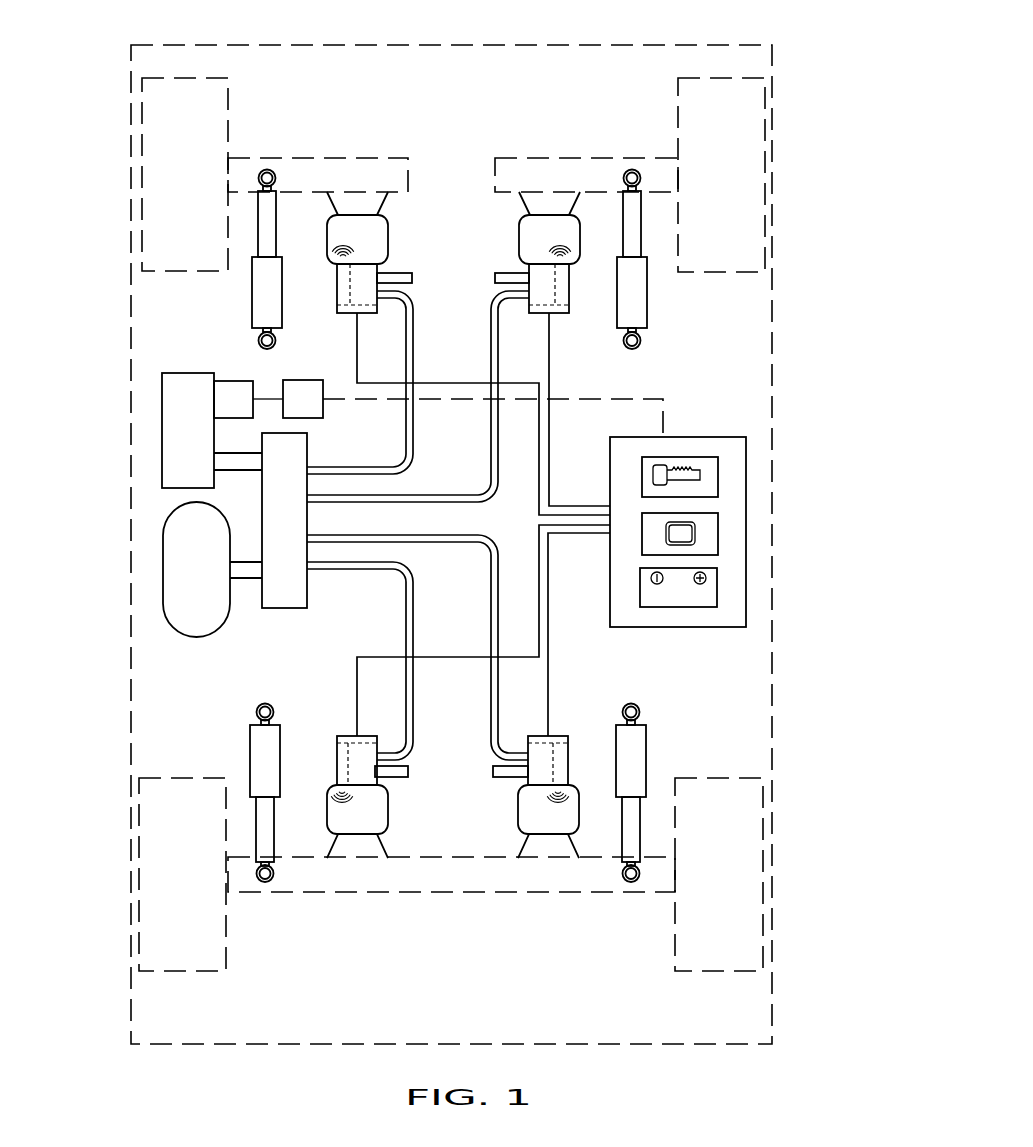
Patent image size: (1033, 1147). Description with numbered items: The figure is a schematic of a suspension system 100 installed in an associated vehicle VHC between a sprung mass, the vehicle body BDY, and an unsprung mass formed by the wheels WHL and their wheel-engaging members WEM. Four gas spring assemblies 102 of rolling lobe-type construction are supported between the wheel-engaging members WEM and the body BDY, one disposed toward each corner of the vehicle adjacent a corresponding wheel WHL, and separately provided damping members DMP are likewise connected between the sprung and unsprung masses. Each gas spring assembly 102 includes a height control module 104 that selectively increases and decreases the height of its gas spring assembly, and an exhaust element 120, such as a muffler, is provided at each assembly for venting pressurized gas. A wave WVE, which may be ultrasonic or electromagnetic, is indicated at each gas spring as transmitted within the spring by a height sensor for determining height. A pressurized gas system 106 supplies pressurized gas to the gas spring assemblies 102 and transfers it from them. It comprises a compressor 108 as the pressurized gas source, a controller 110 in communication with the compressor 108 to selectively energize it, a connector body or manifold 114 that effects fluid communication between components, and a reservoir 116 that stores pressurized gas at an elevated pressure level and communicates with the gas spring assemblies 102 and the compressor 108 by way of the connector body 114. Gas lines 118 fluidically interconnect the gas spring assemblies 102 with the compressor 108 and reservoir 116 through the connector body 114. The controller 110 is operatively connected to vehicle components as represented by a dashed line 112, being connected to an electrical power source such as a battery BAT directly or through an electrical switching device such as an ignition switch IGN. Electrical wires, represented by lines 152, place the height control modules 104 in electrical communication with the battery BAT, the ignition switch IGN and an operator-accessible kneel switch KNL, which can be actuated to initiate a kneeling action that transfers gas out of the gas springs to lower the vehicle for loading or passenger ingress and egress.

The suspension system 100 is at (712, 357).
The gas spring assembly 102 is at (393, 223).
The height control module 104 is at (337, 293).
The pressurized gas system 106 is at (192, 505).
The compressor 108 is at (204, 439).
The controller 110 is at (322, 410).
The dashed line 112 is at (557, 398).
The connector body or manifold 114 is at (302, 523).
The reservoir 116 is at (212, 573).
The gas line 118 is at (491, 345).
The exhaust element 120 is at (408, 283).
The electrical wire 152 is at (549, 410).
The vehicle body BDY is at (633, 45).
The wheel WHL is at (175, 117).
The wheel-engaging member WEM is at (303, 158).
The vehicle VHC is at (790, 270).
The damping member DMP is at (253, 305).
The wave WVE is at (358, 251).
The ignition switch IGN is at (718, 476).
The kneel switch KNL is at (718, 533).
The battery BAT is at (717, 588).